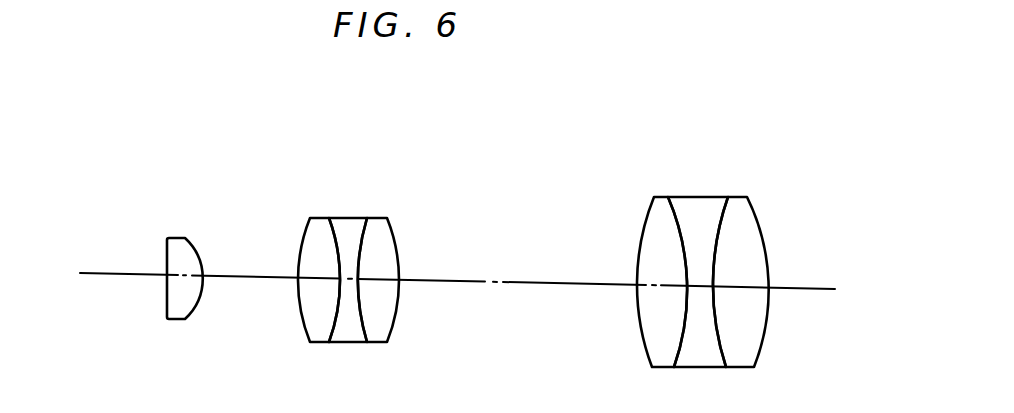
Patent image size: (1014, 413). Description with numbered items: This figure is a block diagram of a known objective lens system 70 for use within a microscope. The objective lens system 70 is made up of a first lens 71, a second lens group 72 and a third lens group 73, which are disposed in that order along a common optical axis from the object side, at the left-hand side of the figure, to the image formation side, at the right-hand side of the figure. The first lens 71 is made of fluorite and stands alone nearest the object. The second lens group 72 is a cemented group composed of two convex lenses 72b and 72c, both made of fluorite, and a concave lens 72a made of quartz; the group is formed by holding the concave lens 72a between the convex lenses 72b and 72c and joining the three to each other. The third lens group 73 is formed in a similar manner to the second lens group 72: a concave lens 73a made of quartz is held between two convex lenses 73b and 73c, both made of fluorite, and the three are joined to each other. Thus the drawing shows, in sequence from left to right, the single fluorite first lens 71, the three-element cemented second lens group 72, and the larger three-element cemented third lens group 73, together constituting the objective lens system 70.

The objective lens system 70 is at (830, 90).
The first lens 71 is at (175, 238).
The second lens group 72 is at (478, 152).
The concave lens 72a is at (347, 218).
The convex lens 72b is at (302, 227).
The convex lens 72c is at (383, 218).
The third lens group 73 is at (828, 155).
The concave lens 73a is at (685, 197).
The convex lens 73b is at (645, 218).
The convex lens 73c is at (747, 197).